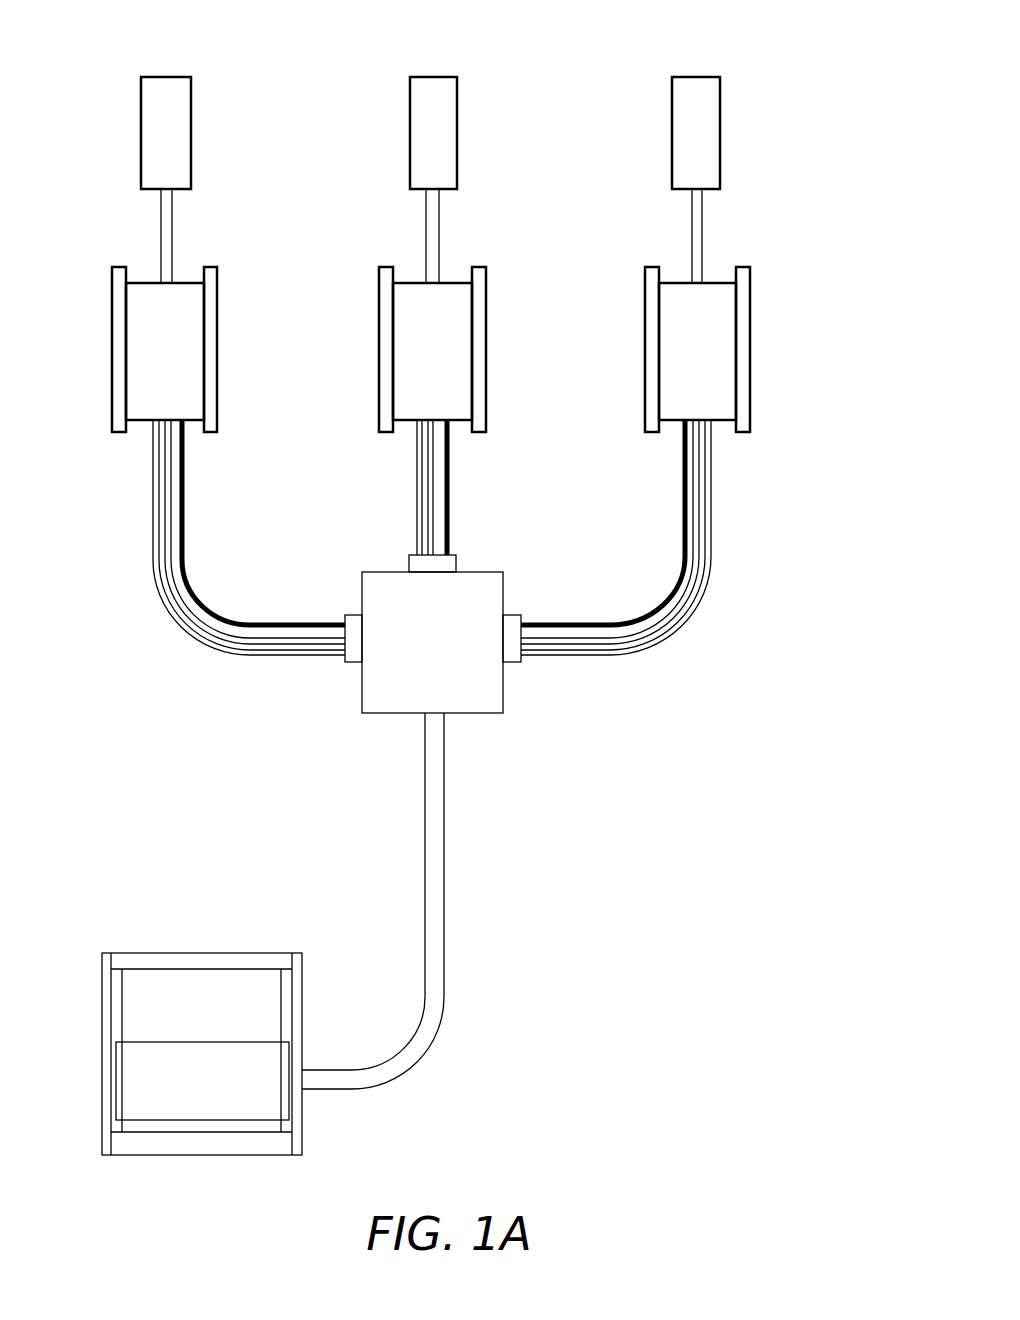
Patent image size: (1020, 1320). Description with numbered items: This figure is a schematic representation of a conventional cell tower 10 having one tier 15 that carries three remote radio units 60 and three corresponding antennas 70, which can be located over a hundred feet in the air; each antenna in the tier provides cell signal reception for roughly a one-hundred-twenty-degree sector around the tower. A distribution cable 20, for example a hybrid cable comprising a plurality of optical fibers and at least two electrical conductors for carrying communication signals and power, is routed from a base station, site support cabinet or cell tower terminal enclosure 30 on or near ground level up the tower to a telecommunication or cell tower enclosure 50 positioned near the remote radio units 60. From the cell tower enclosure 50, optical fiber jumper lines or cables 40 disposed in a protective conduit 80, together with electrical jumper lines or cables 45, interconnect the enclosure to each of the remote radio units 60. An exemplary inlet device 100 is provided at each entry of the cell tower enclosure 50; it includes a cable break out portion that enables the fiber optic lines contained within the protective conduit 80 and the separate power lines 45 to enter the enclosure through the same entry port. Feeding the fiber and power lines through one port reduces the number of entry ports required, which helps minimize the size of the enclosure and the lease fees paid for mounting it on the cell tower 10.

The cell tower 10 is at (724, 36).
The tier 15 is at (770, 244).
The distribution cable 20 is at (437, 955).
The cell tower terminal enclosure 30 is at (193, 953).
The optical fiber jumper cables 40 is at (188, 620).
The electrical jumper cables 45 is at (210, 600).
The cell tower enclosure 50 is at (493, 712).
The remote radio units 60 is at (645, 362).
The antennas 70 is at (672, 168).
The protective conduit 80 is at (153, 521).
The inlet device 100 is at (449, 564).